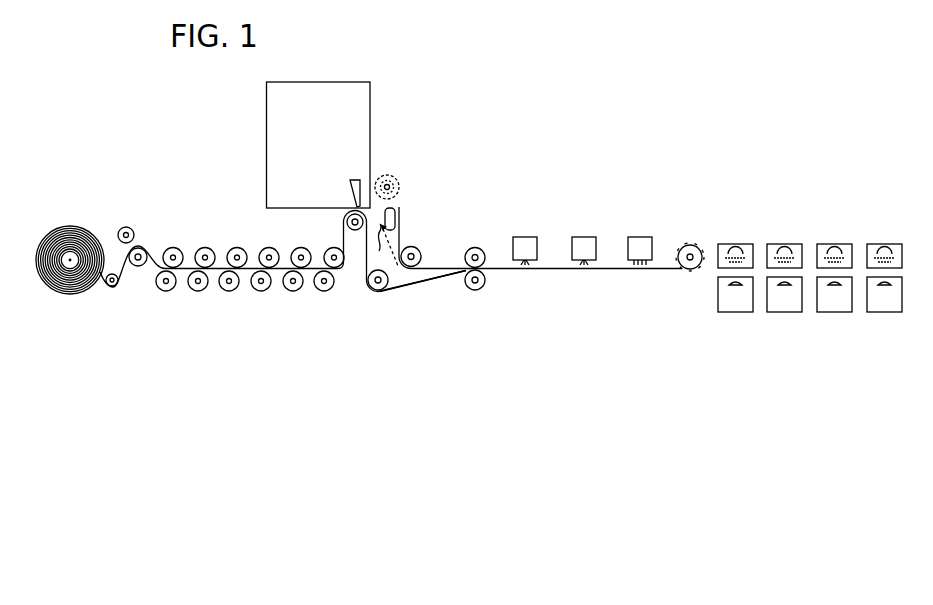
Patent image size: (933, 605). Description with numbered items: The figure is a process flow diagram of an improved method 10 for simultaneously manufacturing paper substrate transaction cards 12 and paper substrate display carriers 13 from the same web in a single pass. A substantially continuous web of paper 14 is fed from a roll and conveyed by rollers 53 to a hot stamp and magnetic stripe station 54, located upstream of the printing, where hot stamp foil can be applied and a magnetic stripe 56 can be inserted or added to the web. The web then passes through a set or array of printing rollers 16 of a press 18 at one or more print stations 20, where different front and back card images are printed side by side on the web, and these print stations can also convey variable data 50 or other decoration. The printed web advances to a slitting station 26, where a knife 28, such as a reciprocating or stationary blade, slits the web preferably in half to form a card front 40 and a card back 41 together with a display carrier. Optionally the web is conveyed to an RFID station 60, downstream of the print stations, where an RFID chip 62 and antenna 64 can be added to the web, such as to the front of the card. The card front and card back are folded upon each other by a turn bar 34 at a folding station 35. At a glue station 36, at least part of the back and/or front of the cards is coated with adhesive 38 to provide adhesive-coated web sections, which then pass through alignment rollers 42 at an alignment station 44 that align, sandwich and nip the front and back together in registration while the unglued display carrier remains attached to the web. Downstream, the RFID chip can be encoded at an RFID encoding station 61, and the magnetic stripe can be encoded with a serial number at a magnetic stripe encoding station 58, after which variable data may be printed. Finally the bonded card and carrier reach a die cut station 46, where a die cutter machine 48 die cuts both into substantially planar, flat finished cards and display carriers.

The method 10 is at (70, 189).
The paper substrate transaction cards 12 is at (735, 232).
The paper substrate display carriers 13 is at (714, 344).
The web of paper 14 is at (73, 297).
The printing rollers 16 is at (175, 249).
The press 18 is at (242, 222).
The print stations 20 is at (334, 297).
The slitting station 26 is at (266, 147).
The knife 28 is at (344, 196).
The turn bar 34 is at (404, 208).
The folding station 35 is at (382, 245).
The glue station 36 is at (389, 315).
The adhesive 38 is at (378, 295).
The card front 40 is at (540, 238).
The card back 41 is at (423, 295).
The alignment rollers 42 is at (483, 289).
The alignment station 44 is at (475, 244).
The die cut station 46 is at (690, 242).
The die cutter machine 48 is at (690, 270).
The variable data 50 is at (640, 234).
The rollers 53 is at (141, 270).
The hot stamp and magnetic stripe station 54 is at (127, 224).
The magnetic stripe 56 is at (127, 207).
The magnetic stripe encoding station 58 is at (585, 234).
The RFID station 60 is at (403, 141).
The RFID encoding station 61 is at (526, 234).
The RFID chip 62 is at (387, 154).
The antenna 64 is at (395, 177).